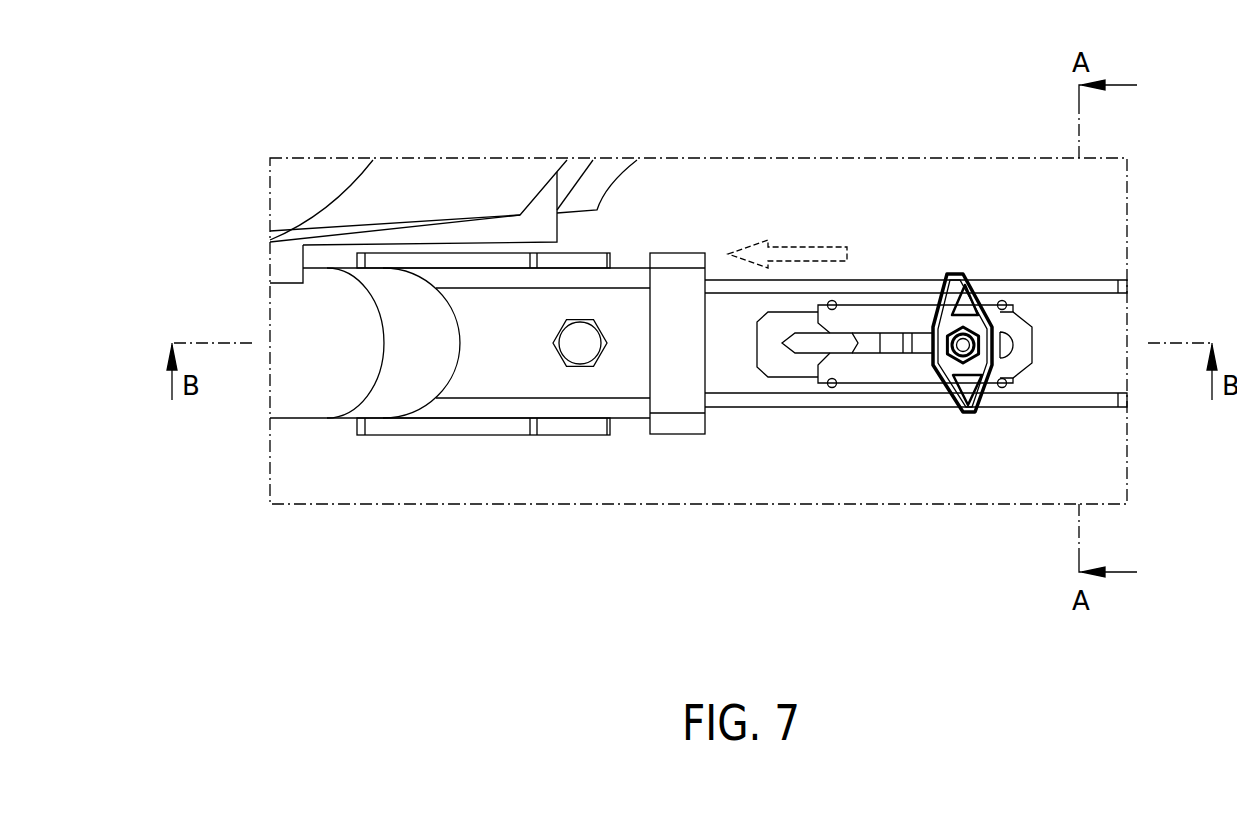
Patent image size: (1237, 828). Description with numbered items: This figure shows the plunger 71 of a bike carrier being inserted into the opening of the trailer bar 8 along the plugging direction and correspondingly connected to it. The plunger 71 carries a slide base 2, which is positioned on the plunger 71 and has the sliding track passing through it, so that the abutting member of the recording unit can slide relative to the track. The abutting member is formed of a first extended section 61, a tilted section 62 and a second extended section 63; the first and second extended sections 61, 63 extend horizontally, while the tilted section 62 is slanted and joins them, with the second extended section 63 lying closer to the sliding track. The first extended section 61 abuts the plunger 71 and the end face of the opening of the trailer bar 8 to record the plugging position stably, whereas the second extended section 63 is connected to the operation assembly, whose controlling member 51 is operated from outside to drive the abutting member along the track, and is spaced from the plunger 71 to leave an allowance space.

The slide base 2 is at (888, 368).
The trailer bar 8 is at (683, 285).
The controlling member 51 is at (975, 320).
The first extended section 61 is at (780, 358).
The tilted section 62 is at (893, 342).
The second extended section 63 is at (920, 345).
The plunger 71 is at (732, 372).